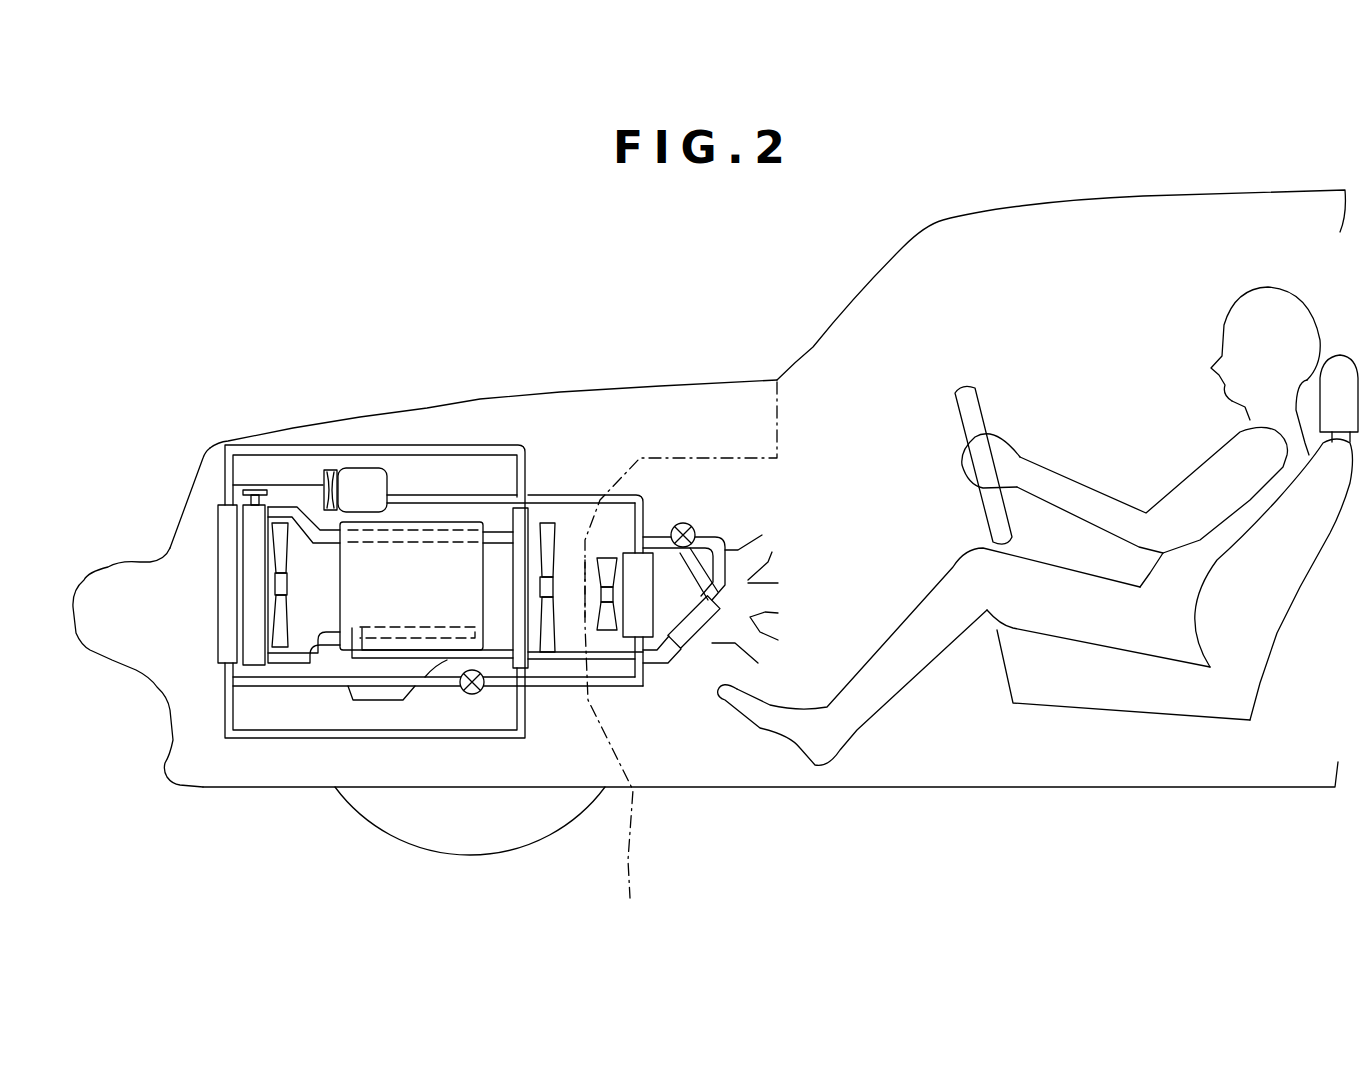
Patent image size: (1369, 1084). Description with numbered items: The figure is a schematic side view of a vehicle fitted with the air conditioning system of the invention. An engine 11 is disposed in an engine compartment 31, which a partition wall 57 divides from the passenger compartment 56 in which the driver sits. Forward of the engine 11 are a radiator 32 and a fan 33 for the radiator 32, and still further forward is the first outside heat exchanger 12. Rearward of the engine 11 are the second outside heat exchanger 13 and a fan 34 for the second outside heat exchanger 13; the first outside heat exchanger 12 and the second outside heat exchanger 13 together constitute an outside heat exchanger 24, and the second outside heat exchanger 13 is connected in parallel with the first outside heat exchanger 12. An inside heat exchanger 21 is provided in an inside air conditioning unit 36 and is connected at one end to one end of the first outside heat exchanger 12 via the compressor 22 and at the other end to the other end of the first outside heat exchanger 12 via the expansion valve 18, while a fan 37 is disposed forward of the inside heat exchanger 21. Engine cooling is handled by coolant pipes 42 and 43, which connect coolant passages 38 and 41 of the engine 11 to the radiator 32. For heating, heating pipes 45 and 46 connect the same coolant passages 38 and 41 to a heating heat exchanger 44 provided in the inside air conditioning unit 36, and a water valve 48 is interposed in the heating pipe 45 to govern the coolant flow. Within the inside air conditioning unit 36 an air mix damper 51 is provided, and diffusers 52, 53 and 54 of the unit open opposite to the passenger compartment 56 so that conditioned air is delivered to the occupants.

The engine 11 is at (437, 522).
The first outside heat exchanger 12 is at (210, 515).
The second outside heat exchanger 13 is at (530, 508).
The expansion valve 18 is at (477, 695).
The inside heat exchanger 21 is at (673, 647).
The compressor 22 is at (362, 468).
The outside heat exchanger 24 is at (497, 447).
The engine compartment 31 is at (177, 562).
The radiator 32 is at (257, 637).
The fan 33 is at (300, 505).
The fan 34 is at (552, 520).
The inside air conditioning unit 36 is at (598, 495).
The fan 37 is at (595, 607).
The coolant passage 38 is at (378, 545).
The coolant passage 41 is at (435, 620).
The coolant pipe 42 is at (295, 540).
The coolant pipe 43 is at (300, 665).
The heating heat exchanger 44 is at (712, 660).
The heating pipe 45 is at (667, 545).
The heating pipe 46 is at (580, 660).
The water valve 48 is at (686, 522).
The air mix damper 51 is at (725, 550).
The diffuser 52 is at (767, 558).
The diffuser 53 is at (775, 612).
The diffuser 54 is at (763, 645).
The passenger compartment 56 is at (1136, 243).
The partition wall 57 is at (681, 661).